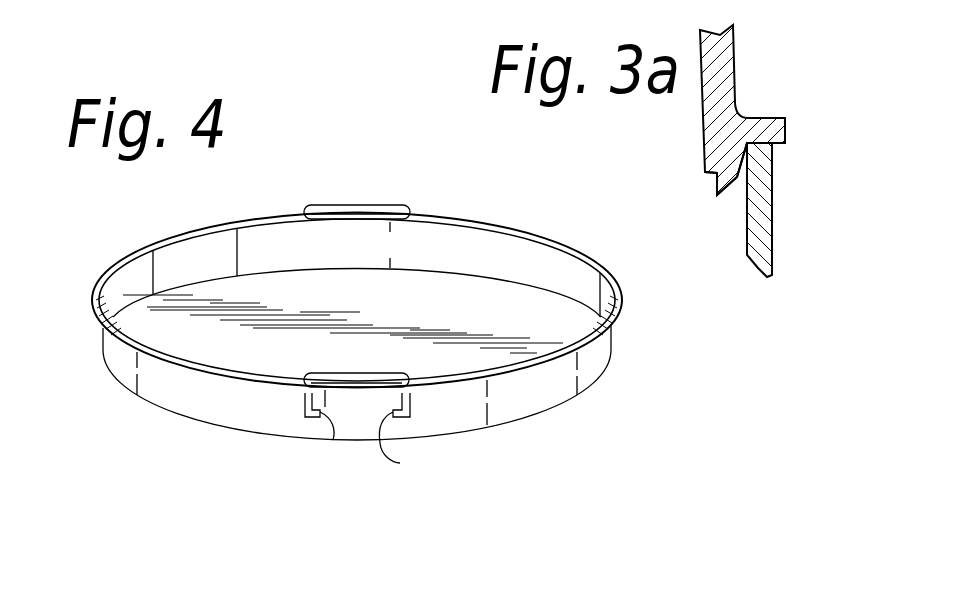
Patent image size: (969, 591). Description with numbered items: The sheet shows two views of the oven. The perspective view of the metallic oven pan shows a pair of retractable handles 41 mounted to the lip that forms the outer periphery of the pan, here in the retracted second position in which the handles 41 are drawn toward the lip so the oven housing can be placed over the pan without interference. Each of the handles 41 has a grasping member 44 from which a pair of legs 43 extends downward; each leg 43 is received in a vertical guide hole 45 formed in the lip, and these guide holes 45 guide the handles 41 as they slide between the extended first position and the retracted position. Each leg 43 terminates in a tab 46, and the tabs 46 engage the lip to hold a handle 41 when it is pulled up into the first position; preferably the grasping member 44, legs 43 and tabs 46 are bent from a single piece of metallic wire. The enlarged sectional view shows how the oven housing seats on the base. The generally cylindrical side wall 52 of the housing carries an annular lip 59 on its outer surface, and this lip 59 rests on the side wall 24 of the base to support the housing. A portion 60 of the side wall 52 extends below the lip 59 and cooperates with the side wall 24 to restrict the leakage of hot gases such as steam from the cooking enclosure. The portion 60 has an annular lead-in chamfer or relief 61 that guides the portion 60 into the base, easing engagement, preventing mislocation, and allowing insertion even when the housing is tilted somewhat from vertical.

In FIG. 3A, the side wall 24 is at (772, 220).
In FIG. 3A, the cylindrical side wall 52 is at (737, 62).
In FIG. 3A, the annular lip 59 is at (783, 118).
In FIG. 3A, the portion 60 is at (718, 160).
In FIG. 3A, the lead-in chamfer or relief 61 is at (737, 185).
In FIG. 4, the retractable handles 41 is at (335, 200).
In FIG. 4, the legs 43 is at (305, 411).
In FIG. 4, the grasping member 44 is at (382, 205).
In FIG. 4, the vertical guide hole 45 is at (305, 208).
In FIG. 4, the tab 46 is at (318, 414).